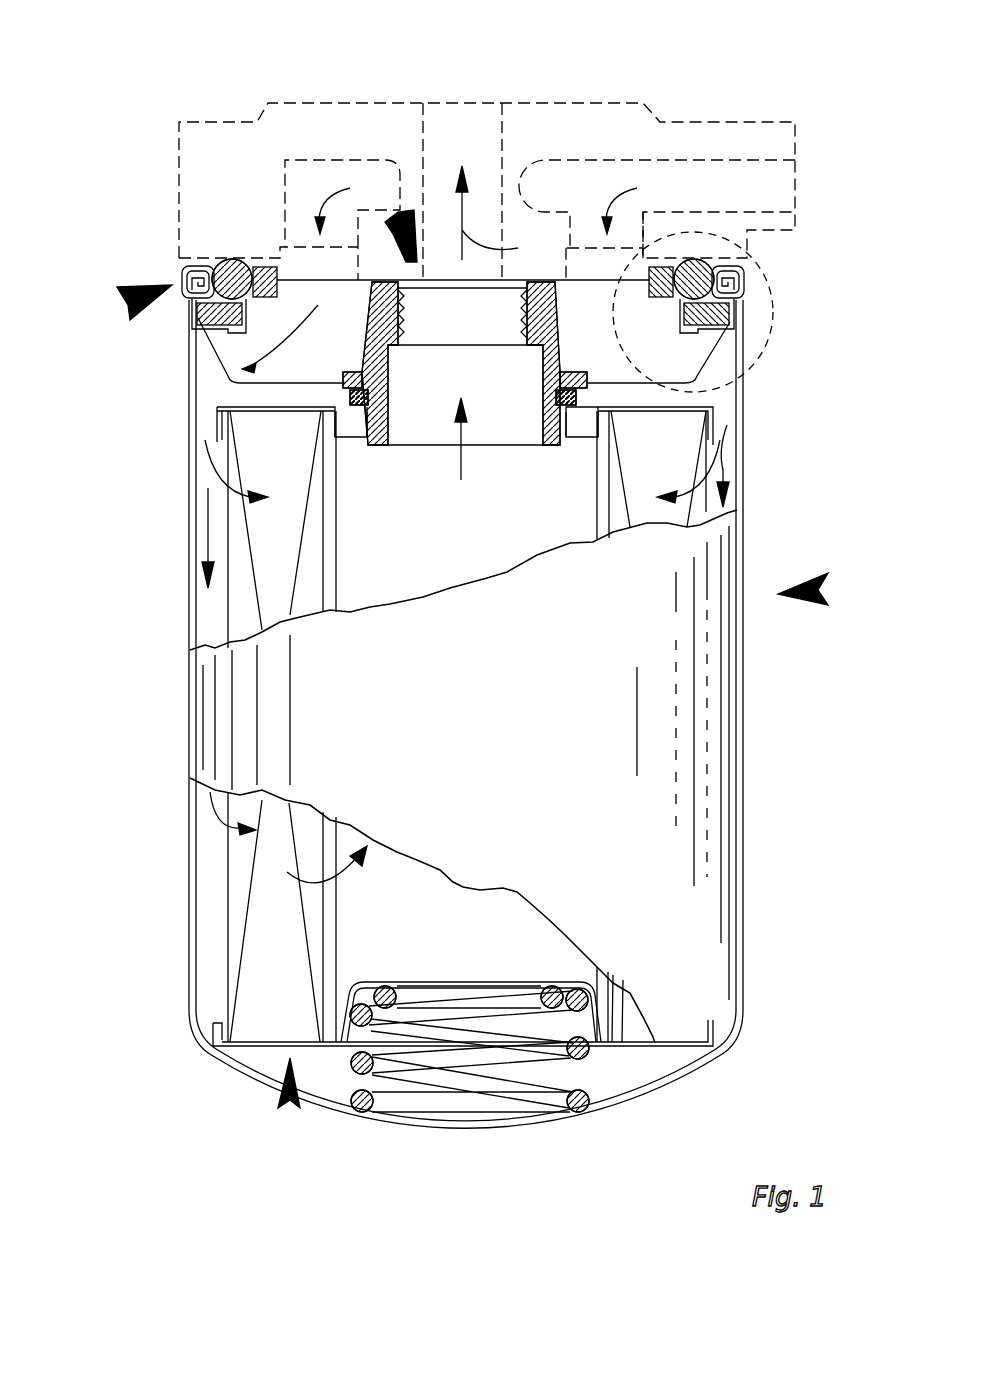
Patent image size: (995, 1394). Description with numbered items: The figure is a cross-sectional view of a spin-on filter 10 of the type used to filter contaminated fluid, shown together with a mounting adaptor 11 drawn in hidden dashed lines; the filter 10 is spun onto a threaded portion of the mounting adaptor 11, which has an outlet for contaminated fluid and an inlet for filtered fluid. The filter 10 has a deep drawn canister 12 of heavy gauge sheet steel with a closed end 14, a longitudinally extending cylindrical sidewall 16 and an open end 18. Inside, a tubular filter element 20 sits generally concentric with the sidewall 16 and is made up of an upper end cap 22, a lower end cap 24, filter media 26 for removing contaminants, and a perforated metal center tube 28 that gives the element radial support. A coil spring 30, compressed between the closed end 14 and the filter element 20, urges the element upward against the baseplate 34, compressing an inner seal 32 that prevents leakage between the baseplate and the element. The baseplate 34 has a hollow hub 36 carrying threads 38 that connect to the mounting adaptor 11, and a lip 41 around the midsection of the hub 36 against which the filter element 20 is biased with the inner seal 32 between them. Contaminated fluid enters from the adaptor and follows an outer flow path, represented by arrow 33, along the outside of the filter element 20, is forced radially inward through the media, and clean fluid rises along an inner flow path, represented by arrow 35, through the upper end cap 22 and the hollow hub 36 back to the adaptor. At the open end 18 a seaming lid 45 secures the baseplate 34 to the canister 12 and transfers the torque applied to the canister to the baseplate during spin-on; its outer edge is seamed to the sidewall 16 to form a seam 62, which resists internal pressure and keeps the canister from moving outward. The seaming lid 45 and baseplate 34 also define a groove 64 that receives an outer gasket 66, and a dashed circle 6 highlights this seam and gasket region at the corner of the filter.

The seal detail area 6 is at (770, 305).
The spin-on filter 10 is at (827, 590).
The mounting adaptor 11 is at (655, 105).
The canister 12 is at (660, 905).
The closed end 14 is at (475, 1128).
The cylindrical sidewall 16 is at (743, 740).
The open end 18 is at (395, 218).
The tubular filter element 20 is at (285, 1108).
The upper end cap 22 is at (295, 400).
The end cap 24 is at (243, 1040).
The filter media 26 is at (270, 910).
The perforated metal center tube 28 is at (325, 925).
The coil spring 30 is at (408, 1105).
The inner seal 32 is at (368, 440).
The outer flow path arrow 33 is at (208, 540).
The baseplate 34 is at (196, 316).
The inner flow path arrow 35 is at (465, 484).
The hub 36 is at (568, 352).
The threads 38 is at (400, 322).
The lip 41 is at (352, 380).
The seaming lid 45 is at (185, 268).
The seam 62 is at (118, 300).
The groove 64 is at (243, 297).
The outer gasket 66 is at (232, 260).